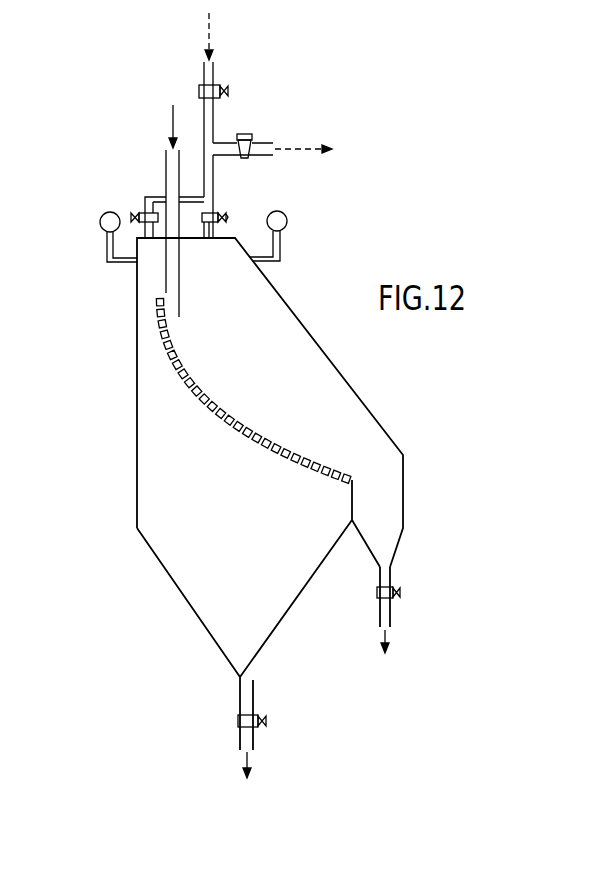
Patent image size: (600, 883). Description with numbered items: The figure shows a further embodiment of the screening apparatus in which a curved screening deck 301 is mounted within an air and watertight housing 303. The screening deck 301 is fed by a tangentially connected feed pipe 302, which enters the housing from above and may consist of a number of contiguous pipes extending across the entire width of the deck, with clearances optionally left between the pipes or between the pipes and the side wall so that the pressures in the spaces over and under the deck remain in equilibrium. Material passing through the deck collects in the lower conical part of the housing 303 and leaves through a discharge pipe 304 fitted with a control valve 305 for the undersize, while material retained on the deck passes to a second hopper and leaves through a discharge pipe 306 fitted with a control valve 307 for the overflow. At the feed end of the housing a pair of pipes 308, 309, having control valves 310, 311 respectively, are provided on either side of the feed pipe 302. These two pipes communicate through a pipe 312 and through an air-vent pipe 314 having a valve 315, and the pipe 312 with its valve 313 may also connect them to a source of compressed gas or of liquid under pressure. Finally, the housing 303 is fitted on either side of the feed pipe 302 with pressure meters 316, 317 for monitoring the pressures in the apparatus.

The screening deck 301 is at (266, 446).
The feed pipe 302 is at (166, 160).
The housing 303 is at (311, 336).
The discharge pipe 304 is at (254, 702).
The control valve 305 is at (266, 722).
The discharge pipe 306 is at (391, 584).
The control valve 307 is at (400, 596).
The pipe 308 is at (145, 197).
The pipe 309 is at (235, 225).
The control valve 310 is at (133, 238).
The control valve 311 is at (226, 216).
The pipe 312 is at (216, 124).
The valve 313 is at (227, 90).
The air-vent pipe 314 is at (262, 143).
The valve 315 is at (250, 134).
The pressure meter 316 is at (100, 222).
The pressure meter 317 is at (287, 221).